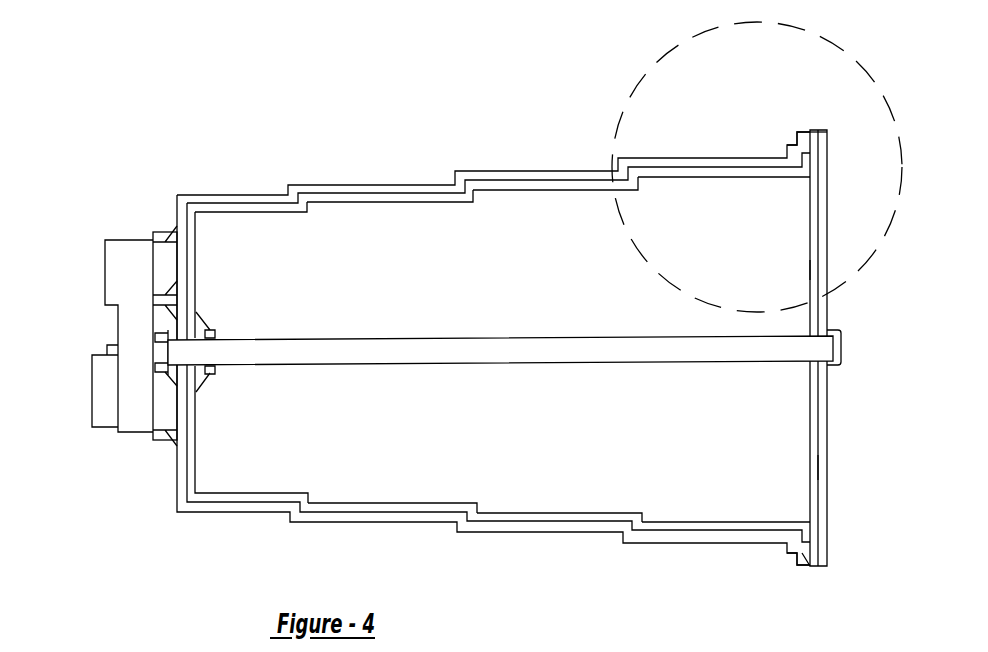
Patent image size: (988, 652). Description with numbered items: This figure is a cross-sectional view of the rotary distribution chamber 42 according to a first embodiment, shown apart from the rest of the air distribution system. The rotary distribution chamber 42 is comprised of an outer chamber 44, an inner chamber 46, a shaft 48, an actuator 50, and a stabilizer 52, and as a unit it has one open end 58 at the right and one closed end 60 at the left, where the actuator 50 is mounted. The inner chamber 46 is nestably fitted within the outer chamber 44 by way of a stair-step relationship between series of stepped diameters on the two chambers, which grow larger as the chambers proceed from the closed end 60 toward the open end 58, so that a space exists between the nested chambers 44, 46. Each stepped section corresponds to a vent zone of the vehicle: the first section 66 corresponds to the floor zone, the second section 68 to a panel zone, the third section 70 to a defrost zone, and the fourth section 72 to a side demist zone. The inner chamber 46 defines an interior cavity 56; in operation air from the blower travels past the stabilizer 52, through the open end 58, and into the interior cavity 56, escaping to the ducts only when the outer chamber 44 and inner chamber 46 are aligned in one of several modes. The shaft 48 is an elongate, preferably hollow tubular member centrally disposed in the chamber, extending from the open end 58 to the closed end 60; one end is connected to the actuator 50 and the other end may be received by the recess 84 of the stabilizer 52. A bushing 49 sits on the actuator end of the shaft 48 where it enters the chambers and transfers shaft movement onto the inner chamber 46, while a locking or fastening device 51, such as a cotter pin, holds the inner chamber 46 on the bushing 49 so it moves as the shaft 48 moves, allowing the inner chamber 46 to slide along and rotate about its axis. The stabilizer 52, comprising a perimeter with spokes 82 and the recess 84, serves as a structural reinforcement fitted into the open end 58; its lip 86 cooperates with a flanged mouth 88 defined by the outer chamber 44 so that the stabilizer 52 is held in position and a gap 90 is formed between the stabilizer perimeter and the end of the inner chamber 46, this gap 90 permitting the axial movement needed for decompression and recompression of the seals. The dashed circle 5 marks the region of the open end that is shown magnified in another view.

The detail area of FIG. 5 is at (832, 50).
The rotary distribution chamber 42 is at (146, 133).
The outer chamber 44 is at (258, 511).
The inner chamber 46 is at (348, 505).
The shaft 48 is at (275, 352).
The bushing 49 is at (210, 320).
The actuator 50 is at (113, 272).
The locking or fastening device 51 is at (210, 367).
The stabilizer 52 is at (827, 230).
The interior cavity 56 is at (562, 437).
The open end 58 is at (827, 468).
The closed end 60 is at (175, 468).
The first section 66 is at (720, 180).
The second section 68 is at (553, 195).
The third section 70 is at (392, 205).
The fourth section 72 is at (272, 213).
The spokes 82 is at (812, 270).
The recess 84 is at (841, 334).
The lip 86 is at (827, 130).
The flanged mouth 88 is at (812, 130).
The gap 90 is at (806, 548).